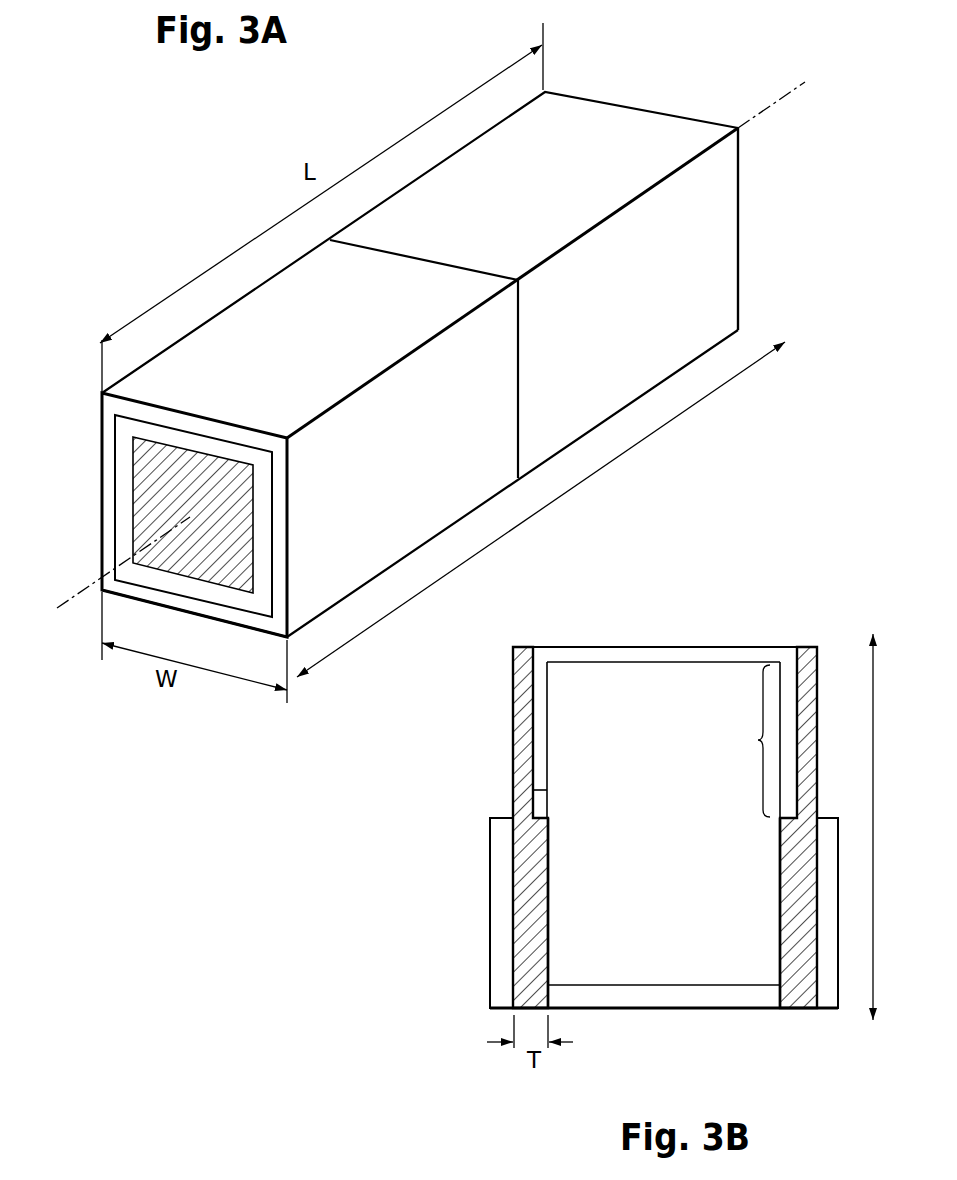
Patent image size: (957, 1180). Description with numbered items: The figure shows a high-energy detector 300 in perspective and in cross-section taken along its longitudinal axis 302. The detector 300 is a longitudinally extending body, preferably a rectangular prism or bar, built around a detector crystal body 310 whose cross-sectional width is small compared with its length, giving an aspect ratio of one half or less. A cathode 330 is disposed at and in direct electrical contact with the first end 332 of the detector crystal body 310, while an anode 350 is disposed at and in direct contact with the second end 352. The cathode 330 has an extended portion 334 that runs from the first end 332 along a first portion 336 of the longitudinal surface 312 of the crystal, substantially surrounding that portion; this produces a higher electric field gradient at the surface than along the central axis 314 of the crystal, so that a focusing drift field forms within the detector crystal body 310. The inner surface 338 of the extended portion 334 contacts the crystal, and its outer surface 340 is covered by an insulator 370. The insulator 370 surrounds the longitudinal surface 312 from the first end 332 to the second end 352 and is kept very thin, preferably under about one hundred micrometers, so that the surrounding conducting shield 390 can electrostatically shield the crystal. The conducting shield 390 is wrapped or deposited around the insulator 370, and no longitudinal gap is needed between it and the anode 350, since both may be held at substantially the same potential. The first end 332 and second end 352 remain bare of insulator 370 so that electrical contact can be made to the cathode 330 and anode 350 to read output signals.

In FIG. 3A, the high-energy detector 300 is at (250, 190).
In FIG. 3B, the high-energy detector 300 is at (745, 605).
In FIG. 3A, the longitudinal axis 302 is at (570, 495).
In FIG. 3B, the longitudinal axis 302 is at (877, 988).
In FIG. 3B, the detector crystal body 310 is at (691, 829).
In FIG. 3B, the longitudinal surface 312 is at (555, 917).
In FIG. 3A, the central axis 314 is at (83, 592).
In FIG. 3B, the cathode 330 is at (630, 657).
In FIG. 3A, the first end 332 is at (753, 224).
In FIG. 3B, the first end 332 is at (590, 640).
In FIG. 3B, the extended portion 334 is at (558, 735).
In FIG. 3B, the first portion 336 is at (746, 741).
In FIG. 3B, the inner surface 338 is at (548, 760).
In FIG. 3B, the outer surface 340 is at (533, 790).
In FIG. 3A, the anode 350 is at (188, 548).
In FIG. 3B, the anode 350 is at (627, 993).
In FIG. 3A, the second end 352 is at (164, 715).
In FIG. 3B, the second end 352 is at (694, 1014).
In FIG. 3A, the insulator 370 is at (564, 181).
In FIG. 3B, the insulator 370 is at (520, 803).
In FIG. 3A, the conducting shield 390 is at (338, 346).
In FIG. 3B, the conducting shield 390 is at (498, 985).